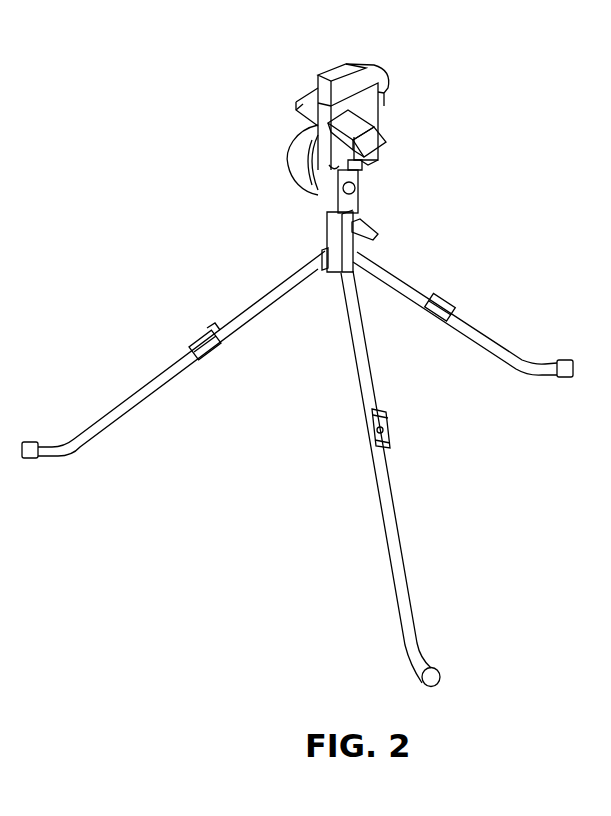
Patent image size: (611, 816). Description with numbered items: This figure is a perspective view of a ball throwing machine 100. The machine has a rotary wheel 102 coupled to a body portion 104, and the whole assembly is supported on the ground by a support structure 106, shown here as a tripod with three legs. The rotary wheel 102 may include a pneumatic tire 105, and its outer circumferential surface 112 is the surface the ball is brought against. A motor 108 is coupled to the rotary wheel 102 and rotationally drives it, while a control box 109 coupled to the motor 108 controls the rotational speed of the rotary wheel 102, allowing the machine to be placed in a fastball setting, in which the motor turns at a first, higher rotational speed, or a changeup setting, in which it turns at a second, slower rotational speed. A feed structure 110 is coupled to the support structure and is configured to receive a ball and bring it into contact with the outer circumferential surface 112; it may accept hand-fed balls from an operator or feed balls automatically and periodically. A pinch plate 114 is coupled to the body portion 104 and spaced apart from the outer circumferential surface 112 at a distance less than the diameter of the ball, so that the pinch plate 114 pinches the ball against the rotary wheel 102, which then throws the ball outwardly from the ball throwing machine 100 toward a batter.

The ball throwing machine 100 is at (182, 146).
The rotary wheel 102 is at (318, 200).
The body portion 104 is at (366, 110).
The pneumatic tire 105 is at (298, 153).
The support structure 106 is at (153, 383).
The motor 108 is at (375, 166).
The control box 109 is at (368, 140).
The feed structure 110 is at (380, 82).
The outer circumferential surface 112 is at (282, 132).
The pinch plate 114 is at (307, 98).